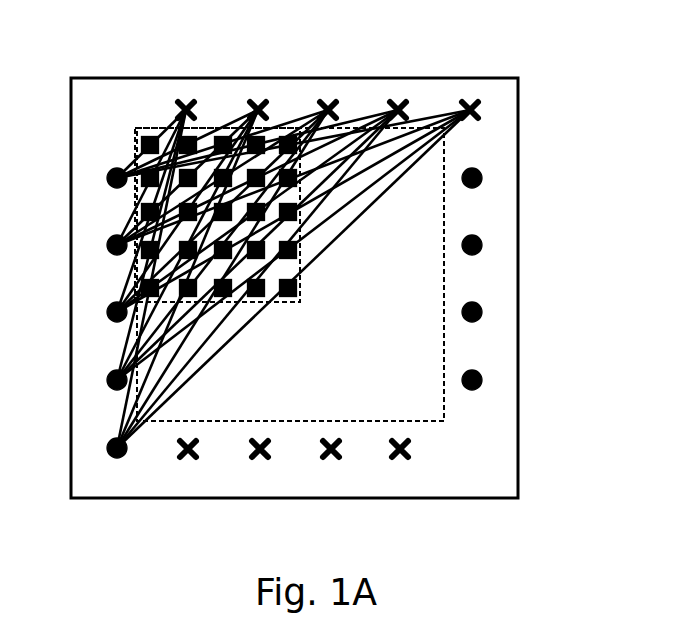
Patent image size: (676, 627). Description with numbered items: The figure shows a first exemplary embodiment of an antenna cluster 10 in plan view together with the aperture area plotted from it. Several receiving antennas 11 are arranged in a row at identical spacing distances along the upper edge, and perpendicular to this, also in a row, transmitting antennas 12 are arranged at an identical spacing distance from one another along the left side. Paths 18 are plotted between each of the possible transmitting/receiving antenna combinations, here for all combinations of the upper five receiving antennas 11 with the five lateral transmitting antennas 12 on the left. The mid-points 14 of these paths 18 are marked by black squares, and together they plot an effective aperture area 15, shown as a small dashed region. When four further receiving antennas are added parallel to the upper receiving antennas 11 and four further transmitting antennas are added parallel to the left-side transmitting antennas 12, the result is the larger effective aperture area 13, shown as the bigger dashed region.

The antenna cluster 10 is at (498, 78).
The receiving antennas 11 is at (258, 108).
The transmitting antennas 12 is at (480, 243).
The effective aperture area 13 is at (445, 410).
The mid-points 14 is at (294, 300).
The effective aperture area 15 is at (300, 260).
The paths 18 is at (230, 345).